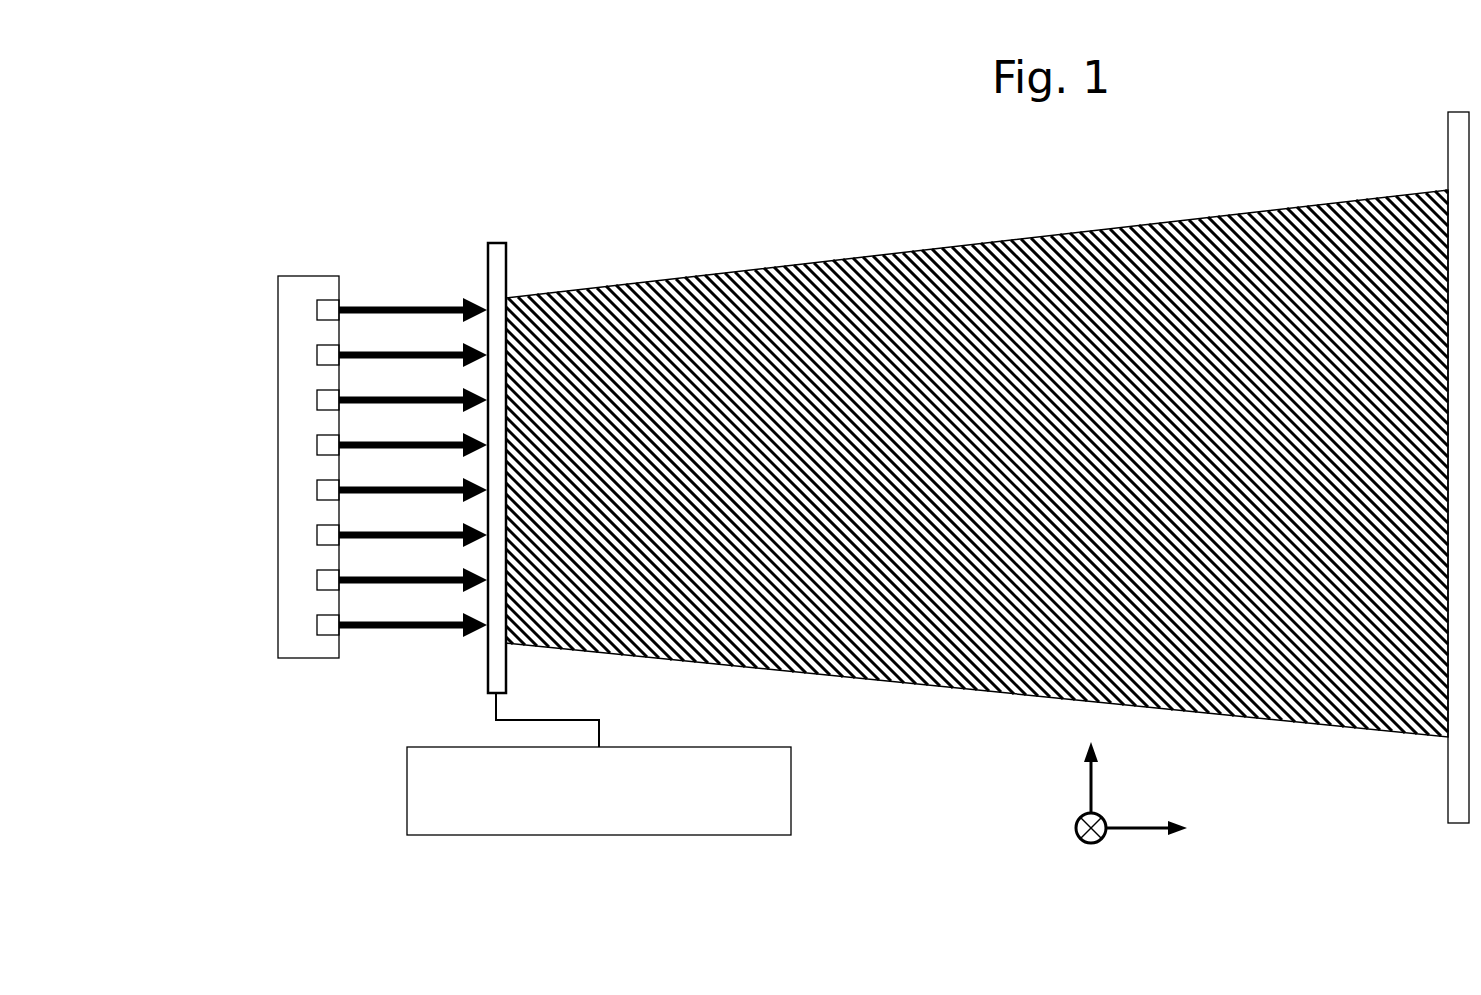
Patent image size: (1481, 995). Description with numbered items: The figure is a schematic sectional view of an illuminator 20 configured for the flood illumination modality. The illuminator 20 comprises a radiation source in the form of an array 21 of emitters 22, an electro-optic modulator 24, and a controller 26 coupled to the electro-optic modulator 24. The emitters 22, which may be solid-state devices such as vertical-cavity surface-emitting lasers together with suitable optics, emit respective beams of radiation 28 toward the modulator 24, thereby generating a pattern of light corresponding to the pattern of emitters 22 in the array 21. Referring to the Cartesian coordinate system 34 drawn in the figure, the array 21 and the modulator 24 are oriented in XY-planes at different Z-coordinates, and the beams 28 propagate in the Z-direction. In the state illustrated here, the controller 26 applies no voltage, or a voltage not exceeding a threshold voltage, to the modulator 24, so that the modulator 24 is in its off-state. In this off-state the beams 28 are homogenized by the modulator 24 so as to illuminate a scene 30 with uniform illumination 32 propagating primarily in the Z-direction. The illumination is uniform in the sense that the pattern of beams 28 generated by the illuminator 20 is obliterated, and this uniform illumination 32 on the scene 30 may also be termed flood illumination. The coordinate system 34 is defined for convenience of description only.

The illuminator 20 is at (386, 156).
The array 21 is at (293, 593).
The emitters 22 is at (328, 315).
The electro-optic modulator 24 is at (508, 245).
The controller 26 is at (752, 813).
The beams of radiation 28 is at (373, 352).
The scene 30 is at (1448, 150).
The uniform illumination 32 is at (1053, 235).
The Cartesian coordinate system 34 is at (1272, 833).